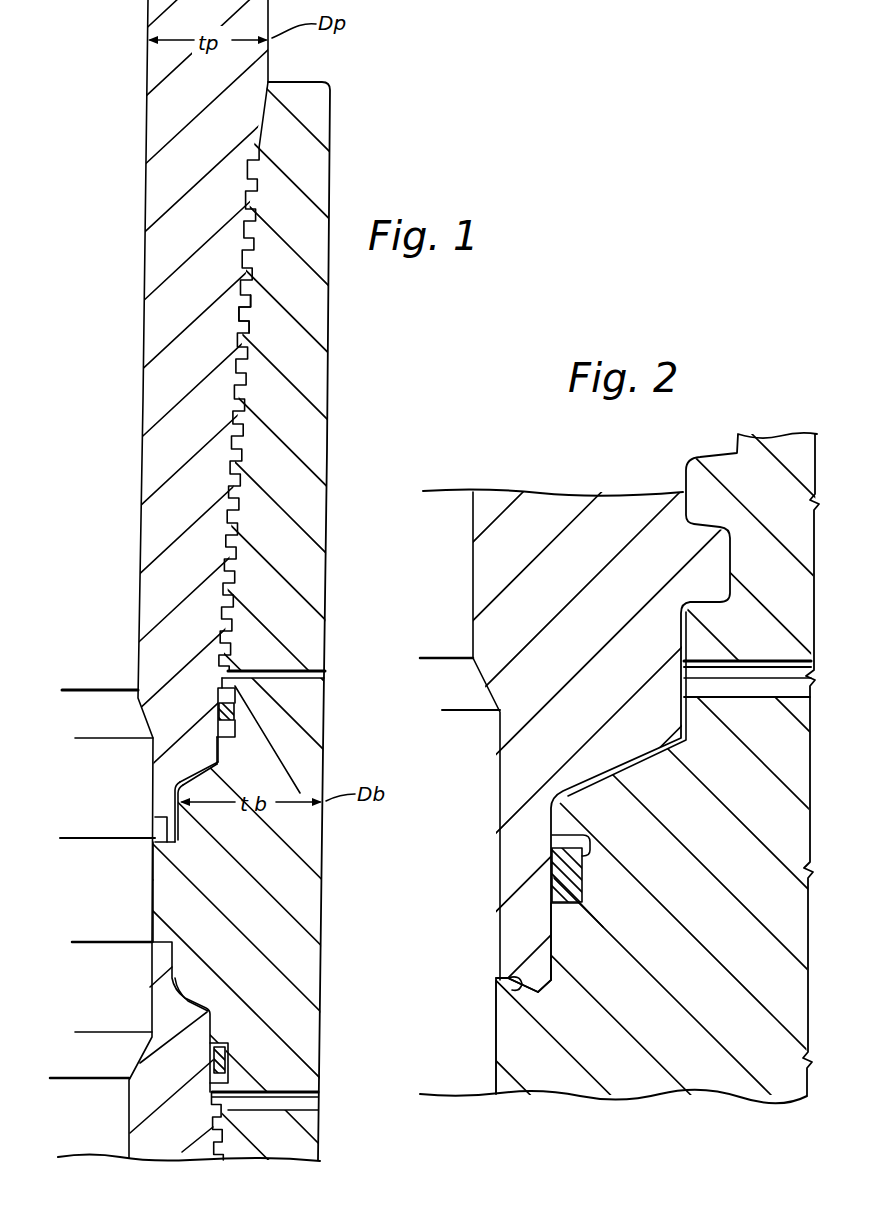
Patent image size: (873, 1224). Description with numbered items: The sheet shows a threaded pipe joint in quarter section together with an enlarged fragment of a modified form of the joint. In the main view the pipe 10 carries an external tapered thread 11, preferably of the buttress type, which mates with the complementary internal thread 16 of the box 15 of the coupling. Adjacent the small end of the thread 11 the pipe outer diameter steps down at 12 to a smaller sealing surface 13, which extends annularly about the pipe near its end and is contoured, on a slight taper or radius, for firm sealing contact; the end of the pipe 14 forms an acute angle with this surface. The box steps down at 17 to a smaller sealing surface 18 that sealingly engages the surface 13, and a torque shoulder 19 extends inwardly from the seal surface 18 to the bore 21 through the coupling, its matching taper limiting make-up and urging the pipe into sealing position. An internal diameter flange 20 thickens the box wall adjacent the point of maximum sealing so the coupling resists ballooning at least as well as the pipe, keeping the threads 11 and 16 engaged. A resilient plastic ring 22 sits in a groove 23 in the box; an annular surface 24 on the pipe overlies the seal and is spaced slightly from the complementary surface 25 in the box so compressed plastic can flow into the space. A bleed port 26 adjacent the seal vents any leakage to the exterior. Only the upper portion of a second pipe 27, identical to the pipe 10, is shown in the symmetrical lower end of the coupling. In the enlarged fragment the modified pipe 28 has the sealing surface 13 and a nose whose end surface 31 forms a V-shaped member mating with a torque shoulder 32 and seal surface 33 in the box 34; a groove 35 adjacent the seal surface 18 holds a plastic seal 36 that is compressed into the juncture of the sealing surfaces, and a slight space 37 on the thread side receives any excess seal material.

In FIG. 1, the pipe 10 is at (160, 440).
In FIG. 1, the external tapered thread 11 is at (236, 397).
In FIG. 1, the step-down 12 is at (208, 764).
In FIG. 1, the sealing surface 13 is at (183, 821).
In FIG. 2, the sealing surface 13 is at (552, 922).
In FIG. 1, the end of the pipe 14 is at (151, 850).
In FIG. 1, the box 15 is at (300, 357).
In FIG. 1, the internal thread 16 is at (251, 324).
In FIG. 1, the step-down in the box 17 is at (220, 772).
In FIG. 1, the sealing surface 18 is at (173, 812).
In FIG. 2, the sealing surface 18 is at (552, 910).
In FIG. 1, the torque shoulder 19 is at (156, 819).
In FIG. 1, the internal diameter flange 20 is at (157, 877).
In FIG. 1, the bore 21 is at (150, 898).
In FIG. 1, the plastic ring 22 is at (236, 712).
In FIG. 1, the groove 23 is at (235, 721).
In FIG. 1, the annular surface 24 is at (222, 748).
In FIG. 1, the complementary surface 25 is at (216, 752).
In FIG. 1, the bleed port 26 is at (287, 667).
In FIG. 1, the pipe 27 is at (145, 1107).
In FIG. 2, the pipe 28 is at (578, 515).
In FIG. 2, the end surface of the pipe 31 is at (507, 990).
In FIG. 2, the torque shoulder 32 is at (508, 977).
In FIG. 2, the seal surface 33 is at (523, 963).
In FIG. 2, the box 34 is at (696, 937).
In FIG. 2, the groove 35 is at (552, 832).
In FIG. 2, the plastic seal 36 is at (558, 858).
In FIG. 2, the space 37 is at (496, 1040).